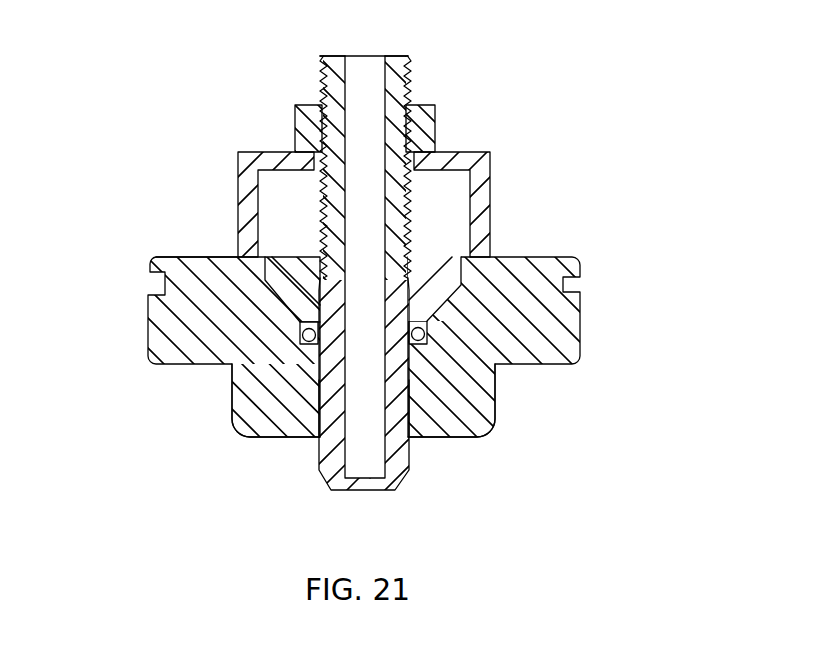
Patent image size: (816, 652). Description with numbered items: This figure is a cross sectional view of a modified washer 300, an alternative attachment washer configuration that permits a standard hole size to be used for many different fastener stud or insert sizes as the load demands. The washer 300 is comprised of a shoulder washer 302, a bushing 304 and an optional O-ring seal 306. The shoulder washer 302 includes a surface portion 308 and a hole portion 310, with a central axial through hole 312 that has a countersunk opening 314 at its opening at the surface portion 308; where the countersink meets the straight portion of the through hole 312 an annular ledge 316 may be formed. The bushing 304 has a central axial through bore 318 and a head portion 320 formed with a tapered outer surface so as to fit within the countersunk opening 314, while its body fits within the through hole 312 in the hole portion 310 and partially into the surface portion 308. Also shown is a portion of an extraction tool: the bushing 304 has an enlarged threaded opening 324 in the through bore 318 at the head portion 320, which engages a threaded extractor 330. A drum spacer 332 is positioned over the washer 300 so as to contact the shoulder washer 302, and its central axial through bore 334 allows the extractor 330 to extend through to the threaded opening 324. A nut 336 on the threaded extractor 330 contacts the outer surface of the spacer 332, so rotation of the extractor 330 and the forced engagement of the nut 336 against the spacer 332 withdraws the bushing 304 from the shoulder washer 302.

The modified washer 300 is at (93, 254).
The shoulder washer 302 is at (542, 257).
The bushing 304 is at (316, 464).
The O-ring seal 306 is at (303, 341).
The surface portion 308 is at (197, 254).
The hole portion 310 is at (232, 418).
The central axial through hole 312 is at (316, 385).
The countersunk opening 314 is at (270, 270).
The annular ledge 316 is at (411, 346).
The central axial through bore 318 is at (354, 450).
The head portion 320 is at (285, 257).
The threaded opening 324 is at (405, 258).
The threaded extractor 330 is at (408, 73).
The drum spacer 332 is at (474, 153).
The central axial through bore 334 is at (436, 130).
The nut 336 is at (297, 107).